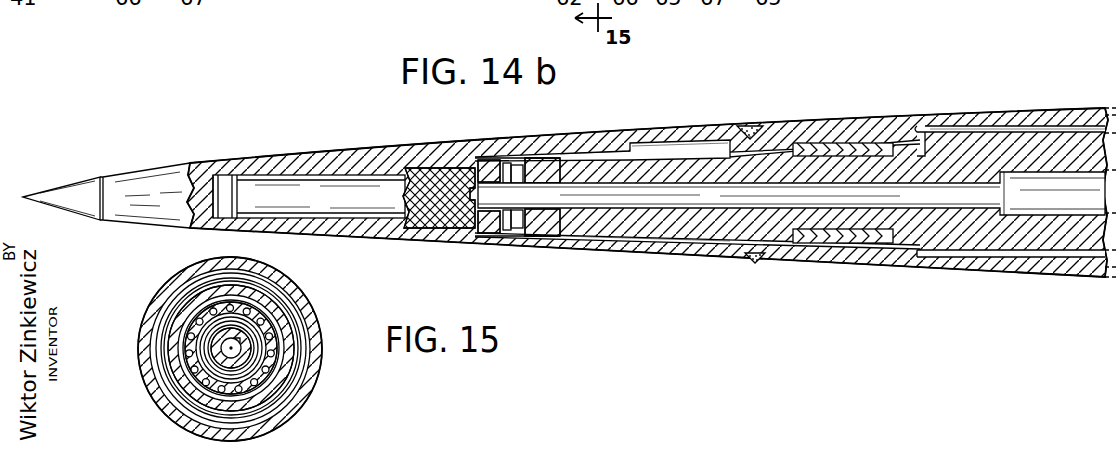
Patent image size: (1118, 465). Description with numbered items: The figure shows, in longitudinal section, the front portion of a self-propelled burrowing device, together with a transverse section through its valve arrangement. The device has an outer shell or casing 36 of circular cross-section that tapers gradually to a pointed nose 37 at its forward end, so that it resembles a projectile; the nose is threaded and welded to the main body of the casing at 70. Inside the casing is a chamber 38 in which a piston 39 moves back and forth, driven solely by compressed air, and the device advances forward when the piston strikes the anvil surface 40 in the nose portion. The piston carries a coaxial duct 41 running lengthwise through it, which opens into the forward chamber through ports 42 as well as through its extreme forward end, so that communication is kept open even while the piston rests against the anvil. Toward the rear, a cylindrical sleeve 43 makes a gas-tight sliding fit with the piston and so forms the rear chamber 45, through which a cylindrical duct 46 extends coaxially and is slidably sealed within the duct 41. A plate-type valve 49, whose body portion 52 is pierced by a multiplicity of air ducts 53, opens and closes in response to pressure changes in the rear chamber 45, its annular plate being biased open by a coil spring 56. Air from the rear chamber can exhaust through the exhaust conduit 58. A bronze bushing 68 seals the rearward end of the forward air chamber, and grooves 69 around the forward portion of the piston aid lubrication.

In FIG. 14b, the outer shell or casing 36 is at (882, 128).
In FIG. 15, the outer shell or casing 36 is at (293, 290).
In FIG. 14b, the pointed nose 37 is at (77, 190).
In FIG. 14b, the chamber 38 is at (696, 144).
In FIG. 14b, the piston 39 is at (627, 162).
In FIG. 14b, the anvil surface 40 is at (437, 203).
In FIG. 14b, the coaxial duct 41 is at (588, 205).
In FIG. 14b, the ports 42 is at (523, 177).
In FIG. 15, the cylindrical sleeve 43 is at (283, 315).
In FIG. 15, the rear chamber 45 is at (287, 332).
In FIG. 15, the cylindrical duct 46 is at (223, 343).
In FIG. 15, the valve 49 is at (282, 338).
In FIG. 15, the body portion of the valve 52 is at (272, 355).
In FIG. 15, the air ducts 53 is at (248, 308).
In FIG. 15, the coil spring 56 is at (222, 340).
In FIG. 14b, the exhaust conduit 58 is at (1047, 127).
In FIG. 15, the exhaust conduit 58 is at (285, 400).
In FIG. 14b, the bronze bushing 68 is at (845, 240).
In FIG. 14b, the grooves 69 is at (640, 230).
In FIG. 14b, the threaded and welded joint 70 is at (745, 131).